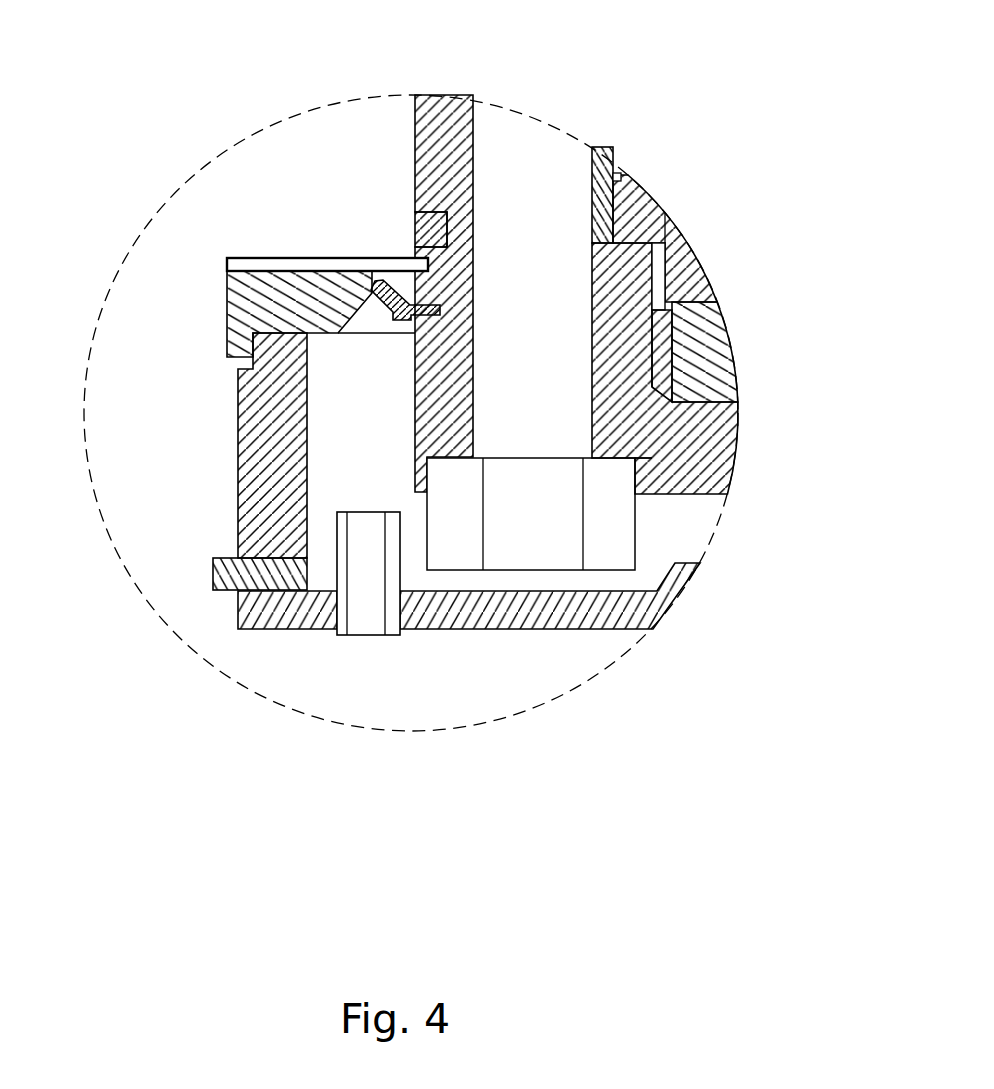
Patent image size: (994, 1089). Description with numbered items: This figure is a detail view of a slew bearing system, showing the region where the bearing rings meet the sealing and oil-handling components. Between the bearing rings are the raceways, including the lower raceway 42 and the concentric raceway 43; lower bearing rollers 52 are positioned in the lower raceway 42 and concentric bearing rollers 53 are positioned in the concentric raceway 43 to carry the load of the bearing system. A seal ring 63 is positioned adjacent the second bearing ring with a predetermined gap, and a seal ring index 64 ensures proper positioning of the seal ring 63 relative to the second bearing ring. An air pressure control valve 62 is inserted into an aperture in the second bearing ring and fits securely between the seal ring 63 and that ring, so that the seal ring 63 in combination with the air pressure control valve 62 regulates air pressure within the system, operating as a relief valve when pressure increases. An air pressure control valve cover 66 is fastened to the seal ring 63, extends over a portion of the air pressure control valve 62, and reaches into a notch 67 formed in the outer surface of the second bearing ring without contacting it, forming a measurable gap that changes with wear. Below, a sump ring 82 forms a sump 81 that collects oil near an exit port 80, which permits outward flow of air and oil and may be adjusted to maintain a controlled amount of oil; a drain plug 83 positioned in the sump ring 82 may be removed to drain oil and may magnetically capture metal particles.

The lower raceway 42 is at (680, 403).
The concentric raceway 43 is at (592, 243).
The lower bearing rollers 52 is at (718, 363).
The concentric bearing rollers 53 is at (630, 213).
The air pressure control valve 62 is at (410, 306).
The seal ring 63 is at (240, 291).
The seal ring index 64 is at (233, 349).
The air pressure control valve cover 66 is at (227, 262).
The notch 67 is at (418, 228).
The exit port 80 is at (370, 602).
The sump 81 is at (336, 457).
The sump ring 82 is at (493, 610).
The drain plug 83 is at (218, 577).